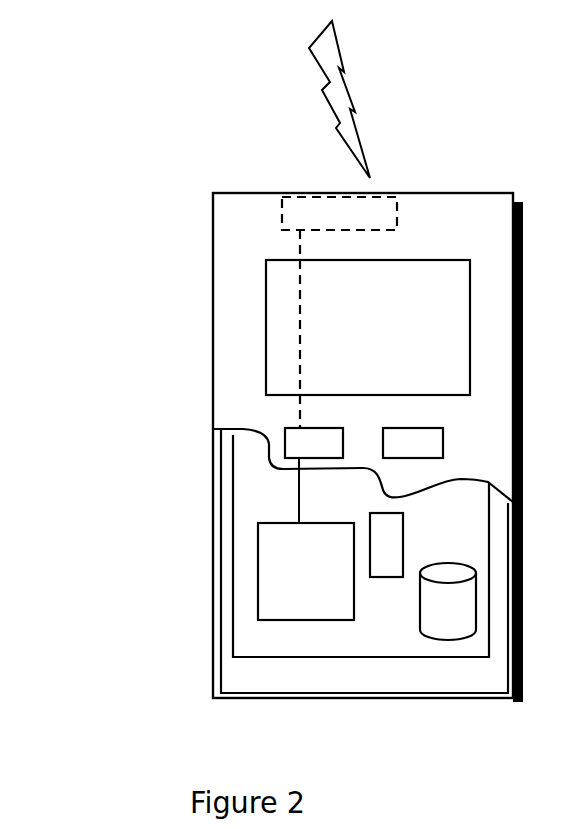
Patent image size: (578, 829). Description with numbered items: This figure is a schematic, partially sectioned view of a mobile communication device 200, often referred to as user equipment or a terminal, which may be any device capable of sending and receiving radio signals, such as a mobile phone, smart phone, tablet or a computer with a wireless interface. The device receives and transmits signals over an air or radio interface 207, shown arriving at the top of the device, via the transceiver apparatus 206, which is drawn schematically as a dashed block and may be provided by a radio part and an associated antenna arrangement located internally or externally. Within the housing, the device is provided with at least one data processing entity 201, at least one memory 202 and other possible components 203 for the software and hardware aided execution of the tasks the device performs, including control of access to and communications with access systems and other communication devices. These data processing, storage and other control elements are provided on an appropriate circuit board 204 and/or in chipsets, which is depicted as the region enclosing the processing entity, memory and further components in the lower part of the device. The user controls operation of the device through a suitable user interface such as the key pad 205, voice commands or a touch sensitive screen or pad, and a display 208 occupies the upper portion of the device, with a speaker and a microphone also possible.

The portable electronic device 200 is at (213, 235).
The data processing entity 201 is at (265, 556).
The memory 202 is at (442, 613).
The other possible components 203 is at (387, 530).
The circuit board 204 is at (258, 640).
The key pad 205 is at (288, 443).
The transceiver apparatus 206 is at (383, 208).
The air or radio interface 207 is at (372, 123).
The display 208 is at (283, 314).